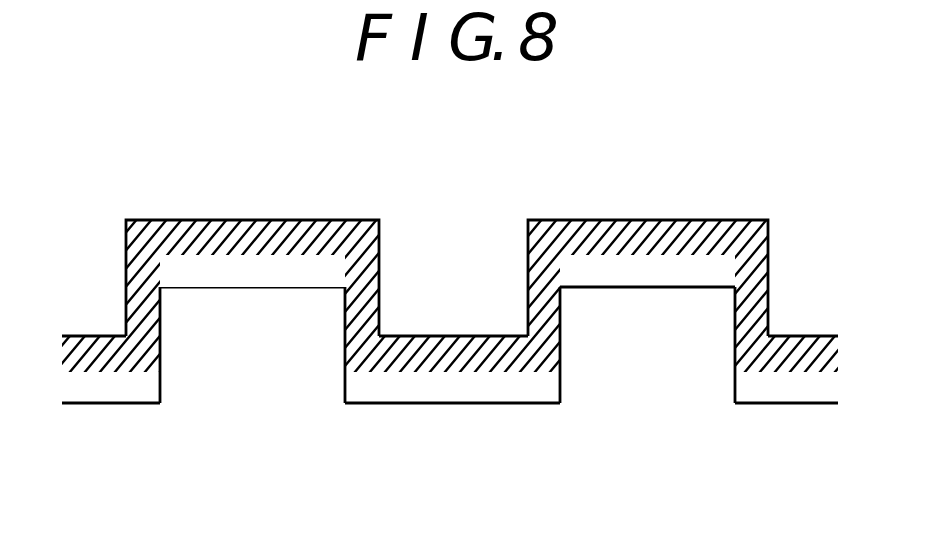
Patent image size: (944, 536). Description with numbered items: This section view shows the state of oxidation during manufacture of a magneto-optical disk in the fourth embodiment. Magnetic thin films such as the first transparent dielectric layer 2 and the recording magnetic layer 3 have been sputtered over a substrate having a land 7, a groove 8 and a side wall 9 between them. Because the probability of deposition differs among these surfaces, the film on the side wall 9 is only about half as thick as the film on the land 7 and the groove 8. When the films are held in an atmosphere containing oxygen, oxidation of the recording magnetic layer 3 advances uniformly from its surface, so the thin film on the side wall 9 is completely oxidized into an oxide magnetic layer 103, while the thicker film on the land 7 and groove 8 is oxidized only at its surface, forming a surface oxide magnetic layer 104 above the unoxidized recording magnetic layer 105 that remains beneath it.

The first transparent dielectric layer 2 is at (467, 423).
The recording magnetic layer 3 is at (472, 310).
The land 7 is at (225, 290).
The groove 8 is at (395, 403).
The side wall 9 is at (342, 347).
The oxide magnetic layer 103 is at (372, 290).
The surface oxide magnetic layer 104 is at (417, 343).
The recording magnetic layer 105 is at (227, 270).